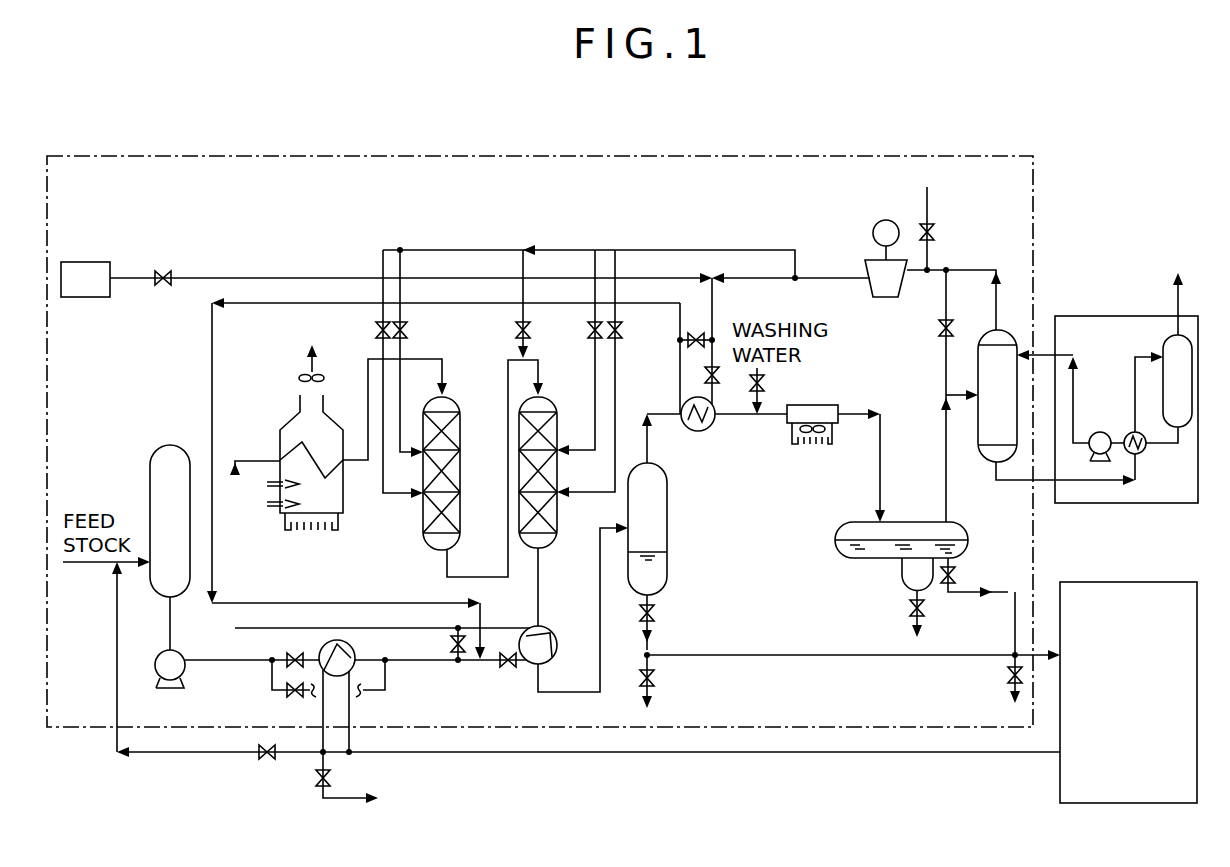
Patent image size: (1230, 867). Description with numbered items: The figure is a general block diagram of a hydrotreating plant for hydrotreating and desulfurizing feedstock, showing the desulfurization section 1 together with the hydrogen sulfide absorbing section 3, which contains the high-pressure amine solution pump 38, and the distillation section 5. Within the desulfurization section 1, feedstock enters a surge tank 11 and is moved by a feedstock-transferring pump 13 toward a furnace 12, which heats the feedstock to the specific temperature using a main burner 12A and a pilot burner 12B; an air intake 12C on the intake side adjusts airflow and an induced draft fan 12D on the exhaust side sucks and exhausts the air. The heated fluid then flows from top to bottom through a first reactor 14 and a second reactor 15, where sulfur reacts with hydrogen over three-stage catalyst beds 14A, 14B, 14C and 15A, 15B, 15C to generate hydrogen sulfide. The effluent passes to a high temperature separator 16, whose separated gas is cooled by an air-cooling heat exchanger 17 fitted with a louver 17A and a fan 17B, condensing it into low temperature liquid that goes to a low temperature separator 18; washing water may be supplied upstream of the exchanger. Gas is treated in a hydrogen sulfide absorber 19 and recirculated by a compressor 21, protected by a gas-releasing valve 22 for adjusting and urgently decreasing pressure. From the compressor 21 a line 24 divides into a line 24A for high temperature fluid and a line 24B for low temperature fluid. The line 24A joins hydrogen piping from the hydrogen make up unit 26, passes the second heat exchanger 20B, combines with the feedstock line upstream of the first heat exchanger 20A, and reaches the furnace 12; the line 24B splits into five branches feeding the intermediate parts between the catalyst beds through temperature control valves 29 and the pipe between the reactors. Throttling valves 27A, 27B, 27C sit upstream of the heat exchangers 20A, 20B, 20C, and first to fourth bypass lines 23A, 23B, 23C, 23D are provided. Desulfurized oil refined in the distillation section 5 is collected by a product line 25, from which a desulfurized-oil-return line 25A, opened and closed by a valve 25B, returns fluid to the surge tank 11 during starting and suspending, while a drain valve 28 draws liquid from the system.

The desulfurization section 1 is at (176, 150).
The hydrogen sulfide absorbing section 3 is at (1098, 292).
The distillation section 5 is at (1128, 574).
The surge tank 11 is at (160, 448).
The furnace 12 is at (290, 418).
The main burner 12A is at (268, 482).
The pilot burner 12B is at (268, 508).
The air intake 12C is at (322, 532).
The induced draft fan 12D is at (299, 378).
The feedstock-transferring pump 13 is at (186, 672).
The first reactor 14 is at (435, 540).
The catalyst bed 14A is at (455, 430).
The catalyst bed 14B is at (455, 472).
The catalyst bed 14C is at (425, 513).
The second reactor 15 is at (548, 545).
The catalyst bed 15A is at (552, 428).
The catalyst bed 15B is at (553, 472).
The catalyst bed 15C is at (555, 515).
The high temperature separator 16 is at (667, 527).
The air-cooling heat exchanger 17 is at (815, 405).
The louver 17A is at (822, 446).
The fan 17B is at (798, 432).
The low temperature separator 18 is at (905, 522).
The hydrogen sulfide absorber 19 is at (1000, 333).
The first heat exchanger 20A is at (558, 648).
The second heat exchanger 20B is at (705, 432).
The third heat exchanger 20C is at (355, 652).
The compressor 21 is at (875, 282).
The gas-releasing valve 22 is at (934, 232).
The first bypass line 23A is at (455, 660).
The second bypass line 23B is at (703, 338).
The third bypass line 23C is at (940, 328).
The fourth bypass line 23D is at (295, 698).
The line 24 is at (716, 199).
The line for high temperature fluid 24A is at (740, 277).
The line for low temperature fluid 24B is at (640, 250).
The product line 25 is at (350, 797).
The desulfurized-oil-return line 25A is at (188, 756).
The valve 25B is at (268, 760).
The hydrogen make up unit 26 is at (86, 262).
The throttling valve 27A is at (508, 670).
The throttling valve 27B is at (704, 376).
The throttling valve 27C is at (290, 654).
The drain valve 28 is at (656, 680).
The temperature control valve 29 is at (376, 330).
The high-pressure amine solution pump 38 is at (1103, 432).